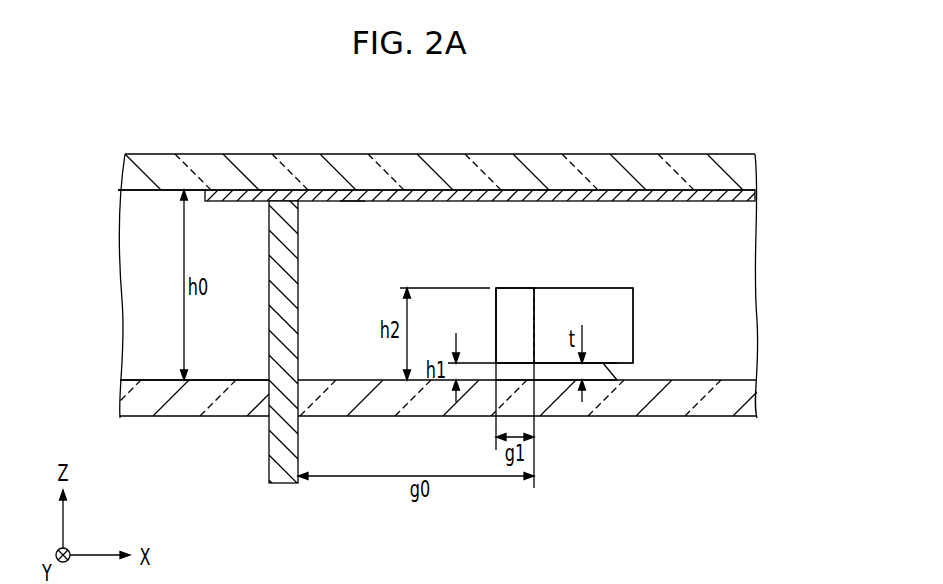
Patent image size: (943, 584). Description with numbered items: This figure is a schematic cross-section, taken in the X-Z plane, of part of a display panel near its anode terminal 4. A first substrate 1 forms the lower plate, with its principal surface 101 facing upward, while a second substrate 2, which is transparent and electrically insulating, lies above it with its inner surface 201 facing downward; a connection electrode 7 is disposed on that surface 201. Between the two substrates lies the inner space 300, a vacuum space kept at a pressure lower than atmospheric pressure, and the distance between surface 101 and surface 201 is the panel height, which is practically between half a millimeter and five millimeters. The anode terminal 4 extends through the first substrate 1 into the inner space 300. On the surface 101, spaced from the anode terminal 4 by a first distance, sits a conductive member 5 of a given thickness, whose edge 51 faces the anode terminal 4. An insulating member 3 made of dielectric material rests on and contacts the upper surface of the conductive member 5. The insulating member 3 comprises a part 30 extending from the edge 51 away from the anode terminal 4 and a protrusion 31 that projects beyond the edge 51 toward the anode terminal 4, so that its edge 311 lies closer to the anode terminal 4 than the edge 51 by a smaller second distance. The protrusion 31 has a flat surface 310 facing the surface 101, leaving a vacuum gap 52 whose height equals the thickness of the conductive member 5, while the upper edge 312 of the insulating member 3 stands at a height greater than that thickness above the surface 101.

The first substrate 1 is at (702, 414).
The surface of the first substrate 101 is at (235, 380).
The second substrate 2 is at (618, 172).
The surface of the second substrate 201 is at (170, 191).
The insulating member 3 is at (713, 327).
The part of the insulating member 30 is at (623, 337).
The protrusion 31 is at (526, 319).
The surface of the protrusion 310 is at (521, 363).
The edge of the insulating member 311 is at (496, 363).
The edge of the insulating member 312 is at (563, 288).
The anode terminal 4 is at (280, 468).
The conductive member 5 is at (598, 370).
The edge of the conductive member 51 is at (536, 368).
The gap 52 is at (497, 372).
The connection electrode 7 is at (426, 190).
The inner space 300 is at (352, 230).